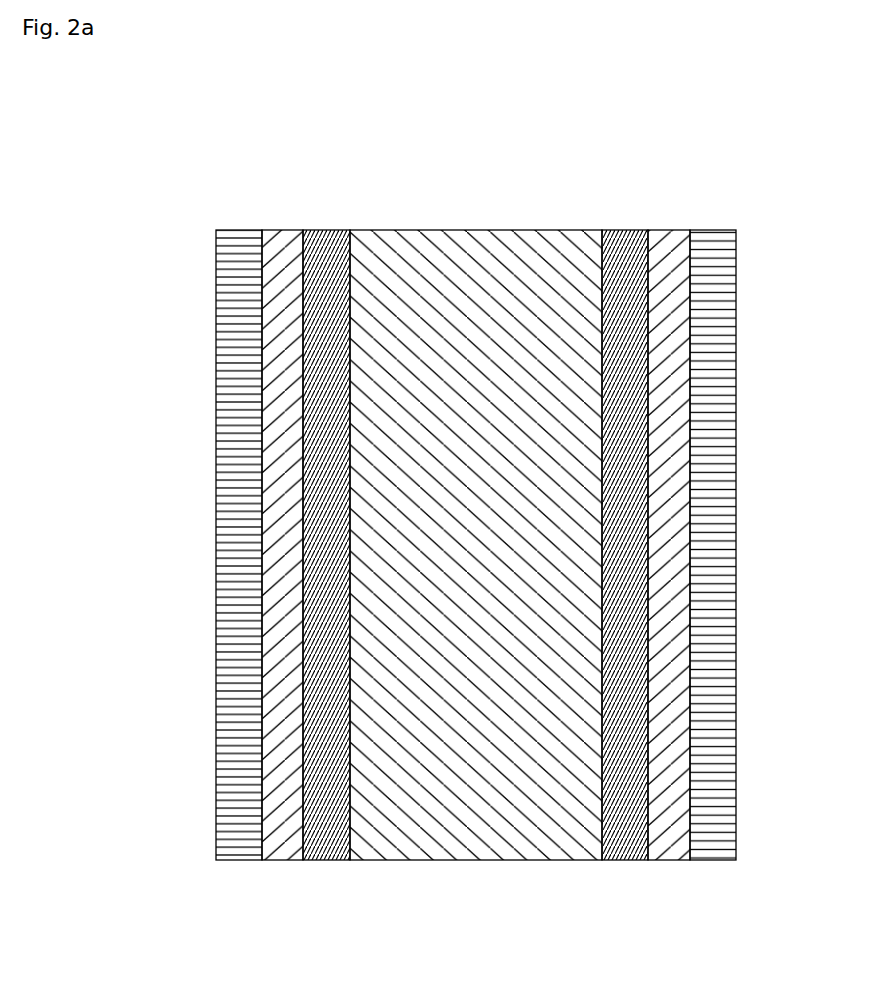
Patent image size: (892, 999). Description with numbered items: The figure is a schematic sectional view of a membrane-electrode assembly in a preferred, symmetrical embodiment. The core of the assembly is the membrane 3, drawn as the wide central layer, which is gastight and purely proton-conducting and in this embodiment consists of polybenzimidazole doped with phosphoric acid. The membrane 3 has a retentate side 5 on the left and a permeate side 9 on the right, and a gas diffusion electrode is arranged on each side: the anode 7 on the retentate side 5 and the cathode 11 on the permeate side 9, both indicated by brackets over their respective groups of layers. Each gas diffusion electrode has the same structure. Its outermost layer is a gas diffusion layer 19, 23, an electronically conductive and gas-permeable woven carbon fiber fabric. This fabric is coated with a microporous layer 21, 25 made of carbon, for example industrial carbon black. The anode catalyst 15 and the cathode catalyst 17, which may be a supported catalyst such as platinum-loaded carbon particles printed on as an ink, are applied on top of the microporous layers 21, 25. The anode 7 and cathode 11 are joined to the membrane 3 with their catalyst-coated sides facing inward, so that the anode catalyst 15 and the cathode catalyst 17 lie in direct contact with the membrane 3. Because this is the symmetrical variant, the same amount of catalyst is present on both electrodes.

The membrane 3 is at (476, 545).
The retentate side 5 is at (153, 545).
The anode 7 is at (270, 504).
The permeate side 9 is at (809, 545).
The cathode 11 is at (660, 511).
The anode catalyst 15 is at (335, 862).
The cathode catalyst 17 is at (611, 861).
The gas diffusion layer 19 is at (213, 862).
The microporous layer 21 is at (283, 862).
The gas diffusion layer 23 is at (727, 861).
The microporous layer 25 is at (668, 861).